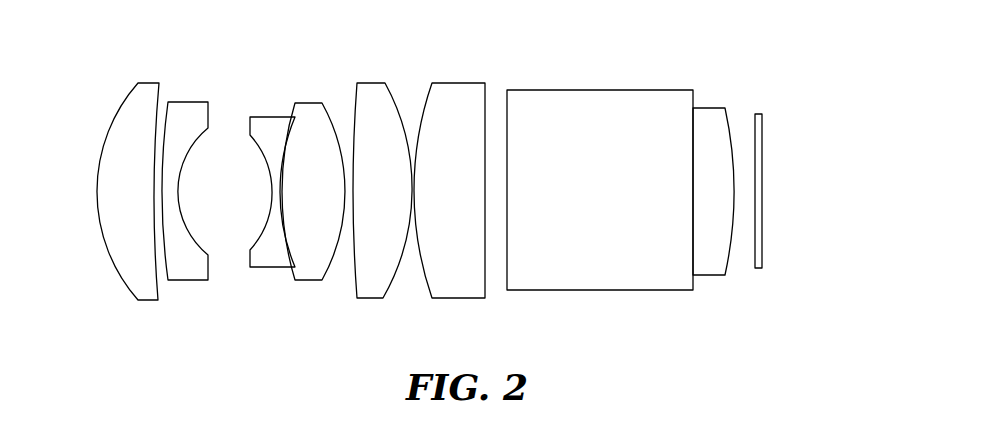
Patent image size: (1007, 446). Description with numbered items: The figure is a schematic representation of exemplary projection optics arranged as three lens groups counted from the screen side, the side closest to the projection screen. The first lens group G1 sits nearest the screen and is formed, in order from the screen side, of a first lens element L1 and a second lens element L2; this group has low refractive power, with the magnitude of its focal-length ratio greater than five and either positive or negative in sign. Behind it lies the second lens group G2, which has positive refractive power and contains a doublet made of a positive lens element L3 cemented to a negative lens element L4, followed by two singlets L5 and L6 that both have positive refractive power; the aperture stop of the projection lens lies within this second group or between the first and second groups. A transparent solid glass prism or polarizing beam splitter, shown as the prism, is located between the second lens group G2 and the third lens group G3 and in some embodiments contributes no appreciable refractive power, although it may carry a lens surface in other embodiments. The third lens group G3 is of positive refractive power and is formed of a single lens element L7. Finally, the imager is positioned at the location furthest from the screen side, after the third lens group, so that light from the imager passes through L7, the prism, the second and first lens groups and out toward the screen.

The first lens group G1 is at (105, 76).
The second lens group G2 is at (245, 73).
The third lens group G3 is at (673, 83).
The first lens element L1 is at (143, 288).
The second lens element L2 is at (189, 258).
The positive lens element L3 is at (272, 253).
The negative lens element L4 is at (308, 268).
The singlet lens element L5 is at (375, 290).
The singlet lens element L6 is at (458, 288).
The seventh lens element L7 is at (712, 245).
The element prism is at (598, 102).
The element imager is at (763, 175).